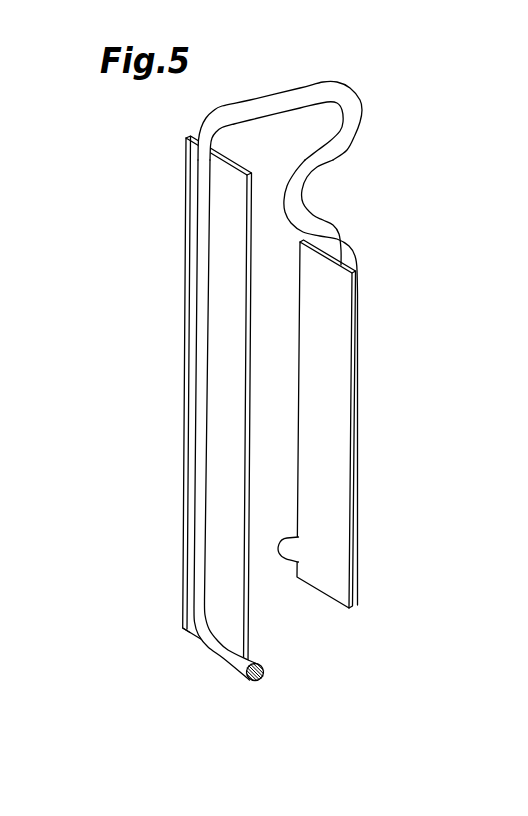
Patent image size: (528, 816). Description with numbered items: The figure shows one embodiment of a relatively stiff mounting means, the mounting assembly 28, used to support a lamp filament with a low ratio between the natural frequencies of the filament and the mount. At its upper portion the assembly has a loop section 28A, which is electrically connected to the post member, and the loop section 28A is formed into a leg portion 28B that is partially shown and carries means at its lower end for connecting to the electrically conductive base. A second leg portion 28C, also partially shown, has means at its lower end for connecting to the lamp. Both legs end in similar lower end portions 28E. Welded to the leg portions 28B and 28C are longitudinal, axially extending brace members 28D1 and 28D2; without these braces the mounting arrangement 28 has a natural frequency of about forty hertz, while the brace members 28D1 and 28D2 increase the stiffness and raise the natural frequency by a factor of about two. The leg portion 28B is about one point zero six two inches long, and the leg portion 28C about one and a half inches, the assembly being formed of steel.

The mounting assembly 28 is at (295, 379).
The loop section 28A is at (357, 103).
The leg portion 28B is at (360, 265).
The leg portion 28C is at (195, 340).
The brace member 28D1 is at (333, 602).
The brace member 28D2 is at (245, 171).
The lower end portion 28E is at (288, 563).